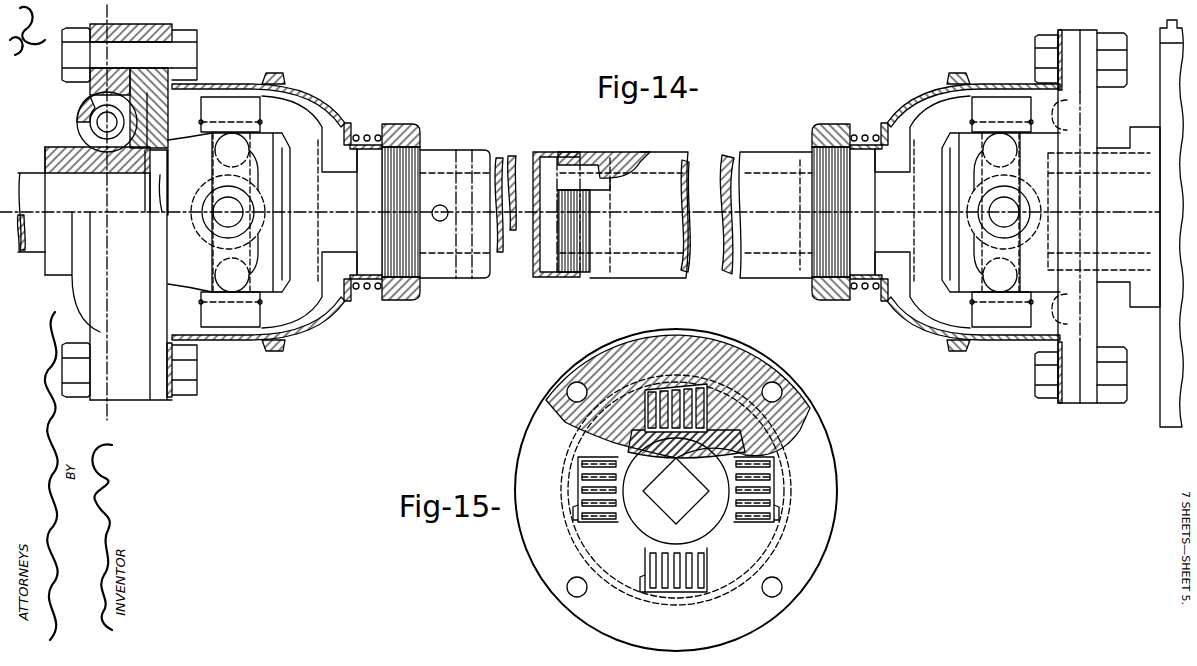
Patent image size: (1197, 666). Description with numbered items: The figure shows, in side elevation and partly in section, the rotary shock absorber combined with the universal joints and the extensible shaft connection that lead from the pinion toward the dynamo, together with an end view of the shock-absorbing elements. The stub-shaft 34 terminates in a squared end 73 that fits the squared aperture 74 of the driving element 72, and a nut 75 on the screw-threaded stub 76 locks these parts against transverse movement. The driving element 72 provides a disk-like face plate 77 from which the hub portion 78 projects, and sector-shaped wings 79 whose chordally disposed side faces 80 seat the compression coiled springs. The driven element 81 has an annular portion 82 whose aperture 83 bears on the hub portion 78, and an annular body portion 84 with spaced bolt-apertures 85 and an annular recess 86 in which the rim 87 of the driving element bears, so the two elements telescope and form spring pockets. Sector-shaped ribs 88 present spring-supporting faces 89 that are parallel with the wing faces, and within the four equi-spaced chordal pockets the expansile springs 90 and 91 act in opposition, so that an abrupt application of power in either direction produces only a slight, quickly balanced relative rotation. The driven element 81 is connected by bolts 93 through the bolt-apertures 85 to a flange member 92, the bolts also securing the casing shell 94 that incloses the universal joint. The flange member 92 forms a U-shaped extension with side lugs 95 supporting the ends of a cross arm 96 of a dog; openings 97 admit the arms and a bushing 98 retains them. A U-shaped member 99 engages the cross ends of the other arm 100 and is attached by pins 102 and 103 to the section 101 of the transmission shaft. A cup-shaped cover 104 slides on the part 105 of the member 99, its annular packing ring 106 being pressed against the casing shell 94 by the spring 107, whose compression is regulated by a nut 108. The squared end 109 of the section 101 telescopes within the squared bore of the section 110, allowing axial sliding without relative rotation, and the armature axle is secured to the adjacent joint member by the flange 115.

In FIG. 14, the stub-shaft 34 is at (31, 180).
In FIG. 14, the driving element 72 is at (129, 171).
In FIG. 15, the driving element 72 is at (676, 491).
In FIG. 14, the squared end 73 is at (67, 273).
In FIG. 15, the squared aperture 74 is at (697, 506).
In FIG. 14, the nut 75 is at (168, 168).
In FIG. 14, the screw-threaded stub 76 is at (175, 187).
In FIG. 14, the face plate 77 is at (167, 130).
In FIG. 15, the face plate 77 is at (765, 556).
In FIG. 14, the hub portion 78 is at (58, 265).
In FIG. 15, the wings 79 is at (676, 488).
In FIG. 15, the coiled springs / chordal side faces of the wings 80 is at (638, 574).
In FIG. 14, the driven element 81 is at (117, 370).
In FIG. 14, the annular portion 82 is at (80, 106).
In FIG. 14, the aperture 83 is at (77, 131).
In FIG. 14, the annular body portion 84 is at (110, 82).
In FIG. 14, the bolt-apertures 85 is at (130, 30).
In FIG. 15, the bolt-apertures 85 is at (674, 489).
In FIG. 14, the annular recess 86 is at (128, 68).
In FIG. 15, the annular recess 86 is at (780, 468).
In FIG. 14, the rim 87 is at (143, 74).
In FIG. 15, the sector-shaped ribs 88 is at (644, 450).
In FIG. 15, the spring-supporting faces 89 is at (710, 578).
In FIG. 15, the expansile springs 90 is at (566, 489).
In FIG. 14, the expansile springs 91 is at (118, 134).
In FIG. 15, the expansile springs 91 is at (667, 392).
In FIG. 14, the flange member 92 is at (154, 270).
In FIG. 14, the bolts 93 is at (197, 38).
In FIG. 14, the casing shell 94 is at (242, 339).
In FIG. 14, the side lugs 95 is at (190, 212).
In FIG. 14, the cross arm 96 is at (228, 212).
In FIG. 14, the openings 97 is at (249, 204).
In FIG. 14, the bushing 98 is at (256, 214).
In FIG. 14, the U-shaped member 99 is at (261, 212).
In FIG. 14, the arm 100 is at (212, 262).
In FIG. 14, the section of the transmission shaft 101 is at (504, 172).
In FIG. 14, the pin 102 is at (440, 205).
In FIG. 14, the pin 103 is at (457, 151).
In FIG. 14, the cup-shaped cover 104 is at (350, 124).
In FIG. 14, the part of the member 99 105 is at (369, 212).
In FIG. 14, the annular packing ring 106 is at (286, 79).
In FIG. 14, the spring 107 is at (372, 292).
In FIG. 14, the nut 108 is at (418, 288).
In FIG. 14, the squared end 109 is at (618, 165).
In FIG. 14, the shaft section 110 is at (625, 226).
In FIG. 14, the flange 115 is at (1103, 156).